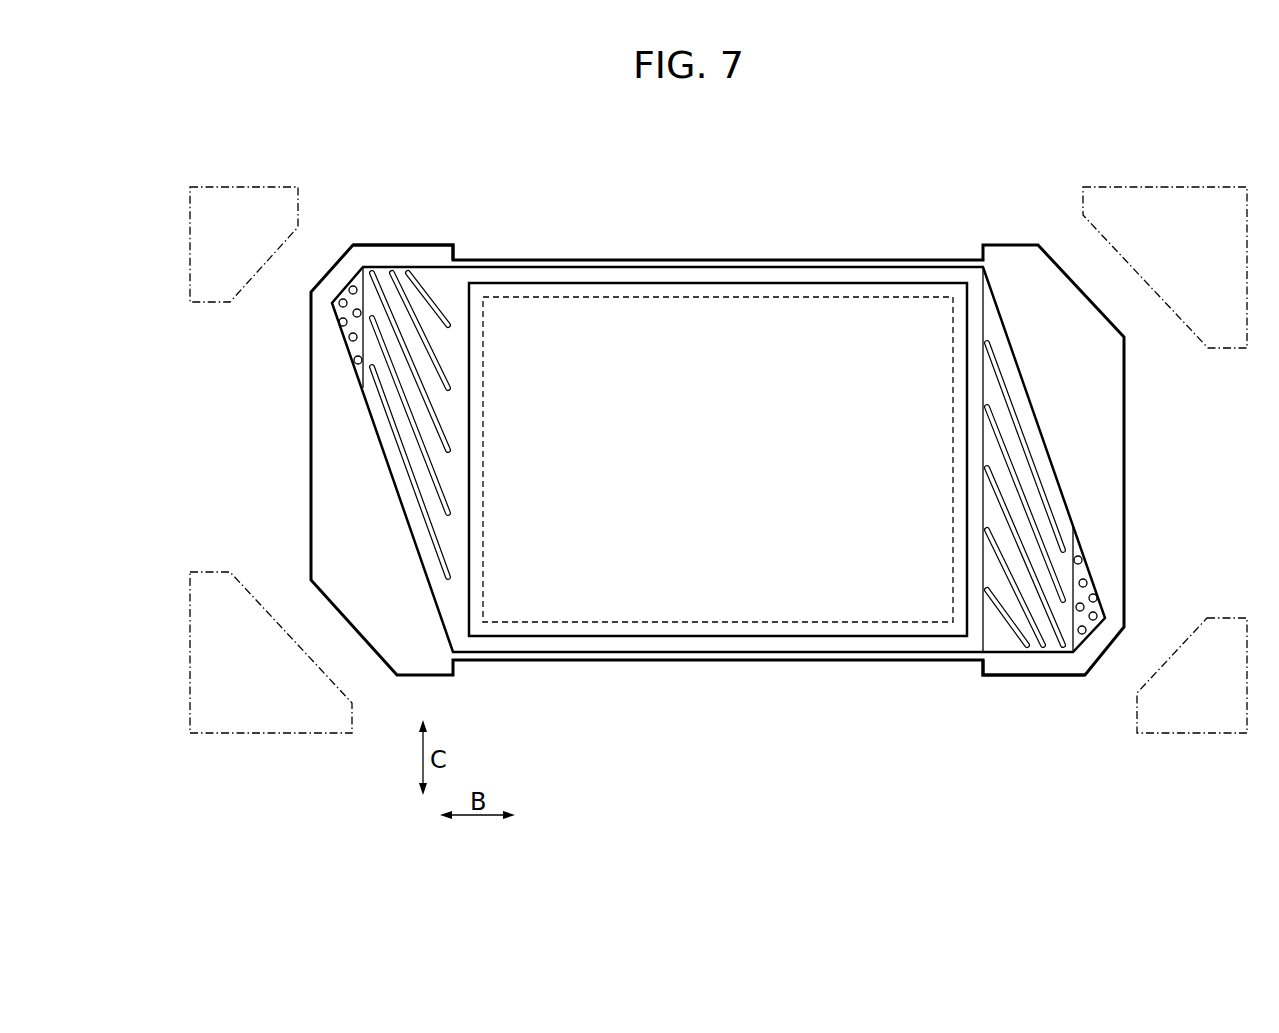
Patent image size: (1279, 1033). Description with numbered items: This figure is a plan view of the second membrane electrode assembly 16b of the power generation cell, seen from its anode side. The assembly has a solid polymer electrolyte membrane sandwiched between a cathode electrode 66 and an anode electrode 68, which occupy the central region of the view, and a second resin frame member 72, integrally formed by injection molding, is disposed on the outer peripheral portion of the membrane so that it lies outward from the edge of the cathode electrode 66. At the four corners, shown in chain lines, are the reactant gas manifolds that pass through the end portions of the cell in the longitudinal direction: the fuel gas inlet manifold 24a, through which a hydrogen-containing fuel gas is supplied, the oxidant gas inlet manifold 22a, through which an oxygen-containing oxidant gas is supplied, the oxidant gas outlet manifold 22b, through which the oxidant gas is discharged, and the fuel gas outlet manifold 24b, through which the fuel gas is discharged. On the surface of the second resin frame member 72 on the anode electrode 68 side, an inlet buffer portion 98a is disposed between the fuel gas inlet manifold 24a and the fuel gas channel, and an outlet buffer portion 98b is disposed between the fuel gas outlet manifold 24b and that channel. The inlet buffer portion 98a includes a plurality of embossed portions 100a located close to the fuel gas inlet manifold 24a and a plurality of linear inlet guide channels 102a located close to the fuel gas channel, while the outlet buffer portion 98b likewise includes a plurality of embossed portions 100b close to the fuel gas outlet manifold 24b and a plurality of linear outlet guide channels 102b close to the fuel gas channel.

The second membrane electrode assembly 16b is at (473, 142).
The second resin frame member 72 is at (1000, 245).
The inlet buffer portion 98a is at (395, 257).
The outlet buffer portion 98b is at (1043, 665).
The anode electrode 68 is at (573, 320).
The cathode electrode 66 is at (627, 350).
The linear inlet guide channels 102a is at (425, 423).
The embossed portions 100a is at (353, 337).
The linear outlet guide channels 102b is at (1012, 497).
The embossed portions 100b is at (1083, 583).
The fuel gas inlet manifold 24a is at (235, 208).
The oxidant gas inlet manifold 22a is at (1158, 205).
The oxidant gas outlet manifold 22b is at (248, 710).
The fuel gas outlet manifold 24b is at (1183, 712).